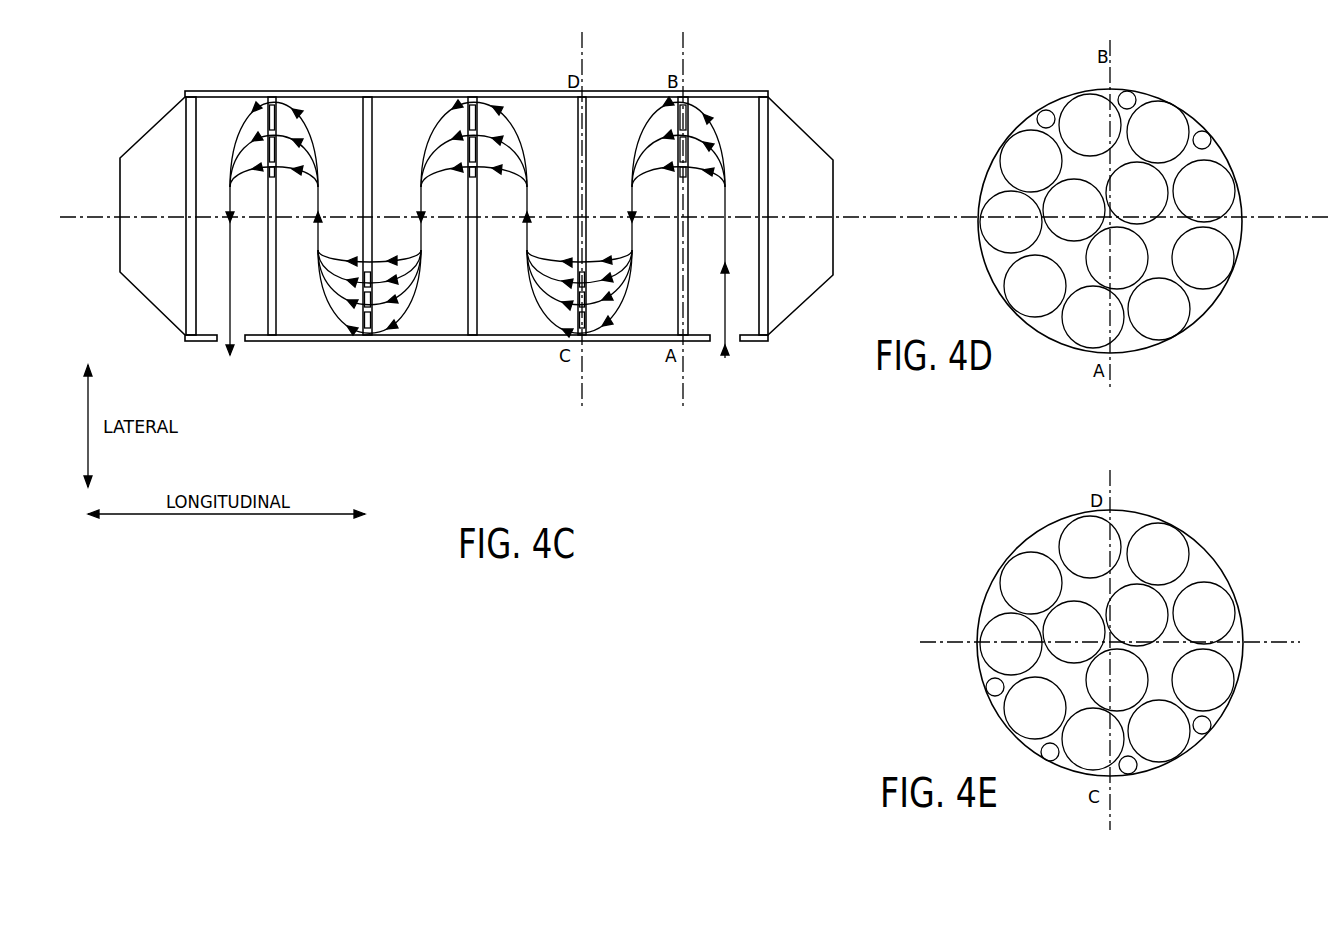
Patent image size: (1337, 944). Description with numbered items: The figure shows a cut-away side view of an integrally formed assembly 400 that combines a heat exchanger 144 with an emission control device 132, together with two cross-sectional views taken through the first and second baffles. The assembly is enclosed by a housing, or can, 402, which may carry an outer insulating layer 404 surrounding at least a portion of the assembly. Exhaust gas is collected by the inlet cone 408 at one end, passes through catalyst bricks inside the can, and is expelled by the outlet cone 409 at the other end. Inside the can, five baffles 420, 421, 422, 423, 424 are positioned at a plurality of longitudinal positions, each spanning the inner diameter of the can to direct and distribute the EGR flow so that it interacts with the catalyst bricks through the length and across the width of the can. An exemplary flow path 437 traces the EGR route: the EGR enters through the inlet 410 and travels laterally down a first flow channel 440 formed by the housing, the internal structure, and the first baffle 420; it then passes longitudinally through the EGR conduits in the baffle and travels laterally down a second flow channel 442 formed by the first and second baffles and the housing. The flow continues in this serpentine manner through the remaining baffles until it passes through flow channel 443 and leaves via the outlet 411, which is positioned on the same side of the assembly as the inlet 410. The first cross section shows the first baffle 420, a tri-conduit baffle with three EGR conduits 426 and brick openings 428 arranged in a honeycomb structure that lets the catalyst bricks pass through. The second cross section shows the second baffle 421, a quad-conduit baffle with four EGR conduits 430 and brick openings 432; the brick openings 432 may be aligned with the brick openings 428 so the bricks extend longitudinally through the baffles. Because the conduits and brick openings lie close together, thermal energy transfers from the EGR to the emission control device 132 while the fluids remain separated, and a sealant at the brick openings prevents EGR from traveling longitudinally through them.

In FIG. 4C, the emission control device 132 is at (826, 104).
In FIG. 4C, the heat exchanger 144 is at (736, 426).
In FIG. 4C, the integrally formed assembly 400 is at (620, 479).
In FIG. 4C, the housing 402 is at (215, 95).
In FIG. 4C, the outer insulating layer 404 is at (266, 91).
In FIG. 4C, the inlet cone 408 is at (795, 285).
In FIG. 4C, the outlet cone 409 is at (160, 140).
In FIG. 4C, the inlet 410 is at (741, 349).
In FIG. 4C, the outlet 411 is at (247, 350).
In FIG. 4C, the first baffle 420 is at (678, 286).
In FIG. 4D, the first baffle 420 is at (997, 86).
In FIG. 4C, the second baffle 421 is at (578, 152).
In FIG. 4E, the second baffle 421 is at (980, 520).
In FIG. 4C, the third baffle 422 is at (468, 277).
In FIG. 4C, the fourth baffle 423 is at (363, 117).
In FIG. 4C, the fifth baffle 424 is at (277, 276).
In FIG. 4D, the EGR conduits 426 is at (1202, 140).
In FIG. 4D, the brick openings 428 is at (1205, 257).
In FIG. 4E, the EGR conduits 430 is at (1202, 730).
In FIG. 4E, the brick openings 432 is at (1213, 678).
In FIG. 4C, the flow path 437 is at (724, 360).
In FIG. 4C, the first flow channel 440 is at (722, 256).
In FIG. 4C, the second flow channel 442 is at (668, 214).
In FIG. 4C, the flow channel 443 is at (265, 246).